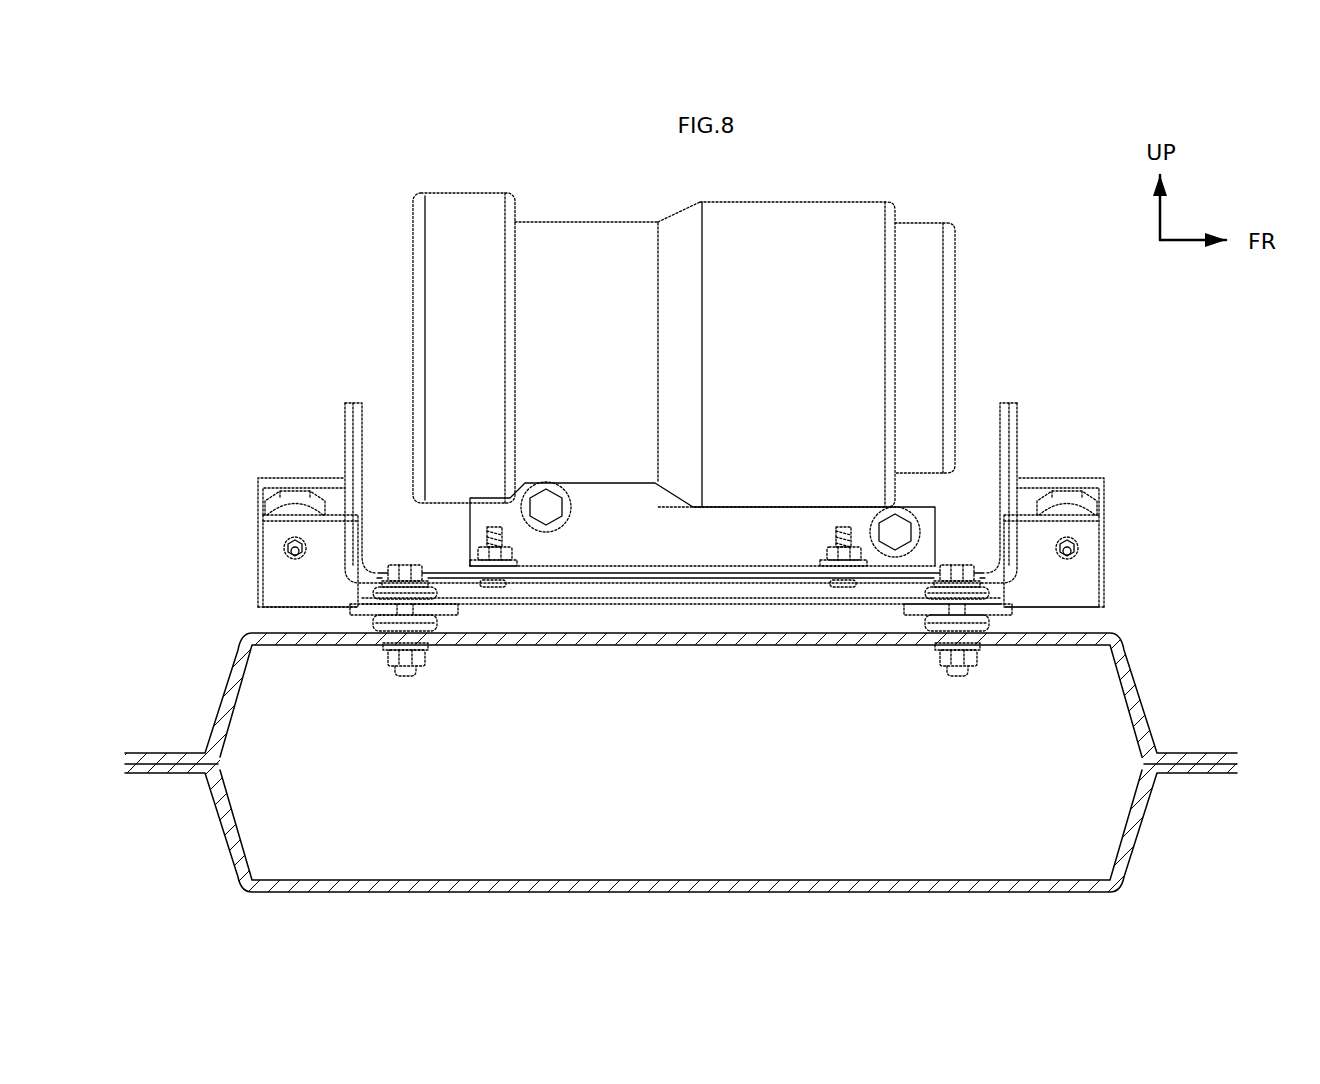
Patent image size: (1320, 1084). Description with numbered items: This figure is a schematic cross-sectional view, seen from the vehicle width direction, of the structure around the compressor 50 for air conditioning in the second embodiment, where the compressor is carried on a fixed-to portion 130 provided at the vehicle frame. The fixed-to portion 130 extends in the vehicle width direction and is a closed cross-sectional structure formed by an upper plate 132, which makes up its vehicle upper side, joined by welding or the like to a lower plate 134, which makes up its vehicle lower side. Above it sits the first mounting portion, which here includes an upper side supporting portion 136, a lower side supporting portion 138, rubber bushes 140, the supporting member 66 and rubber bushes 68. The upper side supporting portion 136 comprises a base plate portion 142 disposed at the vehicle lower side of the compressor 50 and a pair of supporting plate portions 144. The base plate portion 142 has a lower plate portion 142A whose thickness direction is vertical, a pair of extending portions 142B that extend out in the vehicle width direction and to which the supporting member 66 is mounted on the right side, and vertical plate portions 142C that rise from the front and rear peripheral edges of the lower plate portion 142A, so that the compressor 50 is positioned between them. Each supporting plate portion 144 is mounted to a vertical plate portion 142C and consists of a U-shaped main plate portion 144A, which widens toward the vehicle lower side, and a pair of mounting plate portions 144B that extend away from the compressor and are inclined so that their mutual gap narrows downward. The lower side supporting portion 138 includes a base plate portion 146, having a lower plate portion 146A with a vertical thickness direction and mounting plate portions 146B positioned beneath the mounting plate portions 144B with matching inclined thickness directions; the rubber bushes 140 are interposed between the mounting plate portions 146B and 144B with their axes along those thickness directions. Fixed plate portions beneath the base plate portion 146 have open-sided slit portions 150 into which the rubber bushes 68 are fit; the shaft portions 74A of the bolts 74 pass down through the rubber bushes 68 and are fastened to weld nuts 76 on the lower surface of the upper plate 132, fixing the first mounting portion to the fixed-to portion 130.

The compressor for air conditioning 50 is at (835, 210).
The supporting member 66 is at (605, 492).
The rubber bushes 68 is at (440, 626).
The bolts 74 is at (398, 561).
The shaft portions 74A is at (420, 675).
The weld nuts 76 is at (385, 667).
The fixed-to portion 130 is at (660, 765).
The upper plate 132 is at (1146, 705).
The lower plate 134 is at (1141, 830).
The upper side supporting portion 136 is at (680, 453).
The lower side supporting portion 138 is at (685, 574).
The rubber bushes 140 is at (283, 505).
The base plate portion 142 is at (676, 453).
The lower plate portion 142A is at (455, 573).
The extending portions 142B is at (687, 579).
The vertical plate portions 142C is at (357, 455).
The supporting plate portions 144 is at (711, 473).
The main plate portion 144A is at (343, 410).
The mounting plate portions 144B is at (300, 485).
The base plate portion 146 is at (672, 574).
The lower plate portion 146A is at (570, 601).
The mounting plate portions 146B is at (270, 556).
The slit portions 150 is at (403, 614).